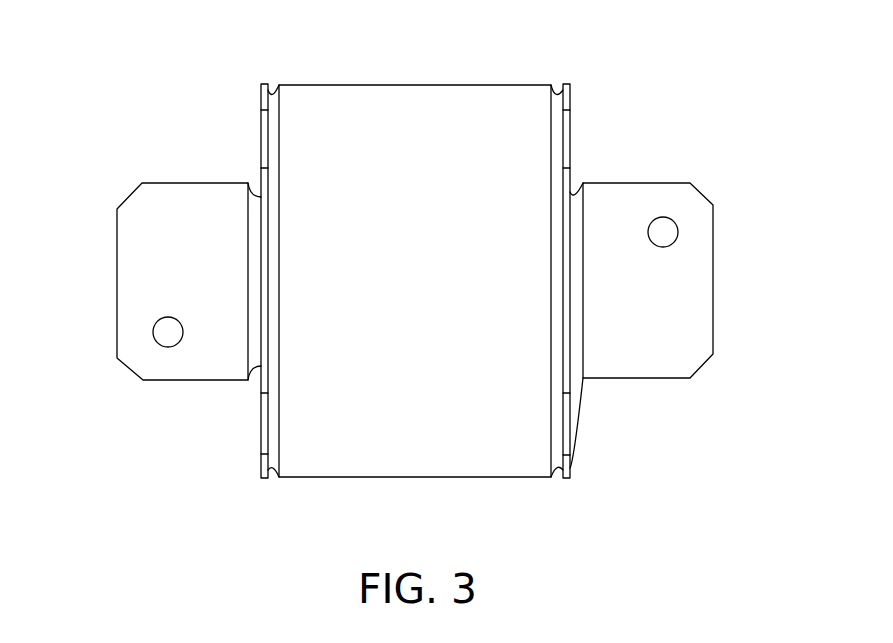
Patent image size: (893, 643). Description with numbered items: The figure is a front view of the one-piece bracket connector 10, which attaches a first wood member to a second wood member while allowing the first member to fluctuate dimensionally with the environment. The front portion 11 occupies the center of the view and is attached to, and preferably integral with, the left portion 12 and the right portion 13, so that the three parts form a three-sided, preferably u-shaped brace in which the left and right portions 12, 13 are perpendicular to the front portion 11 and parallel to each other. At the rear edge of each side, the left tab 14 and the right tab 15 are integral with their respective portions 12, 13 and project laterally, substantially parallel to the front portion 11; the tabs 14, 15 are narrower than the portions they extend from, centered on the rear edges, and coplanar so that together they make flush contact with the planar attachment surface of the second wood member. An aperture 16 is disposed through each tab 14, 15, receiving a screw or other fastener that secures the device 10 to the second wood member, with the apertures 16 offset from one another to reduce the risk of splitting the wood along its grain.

The bracket connector 10 is at (410, 272).
The front portion 11 is at (455, 478).
The left portion 12 is at (571, 127).
The right portion 13 is at (262, 430).
The left tab 14 is at (638, 379).
The right tab 15 is at (186, 183).
The aperture 16 is at (147, 327).